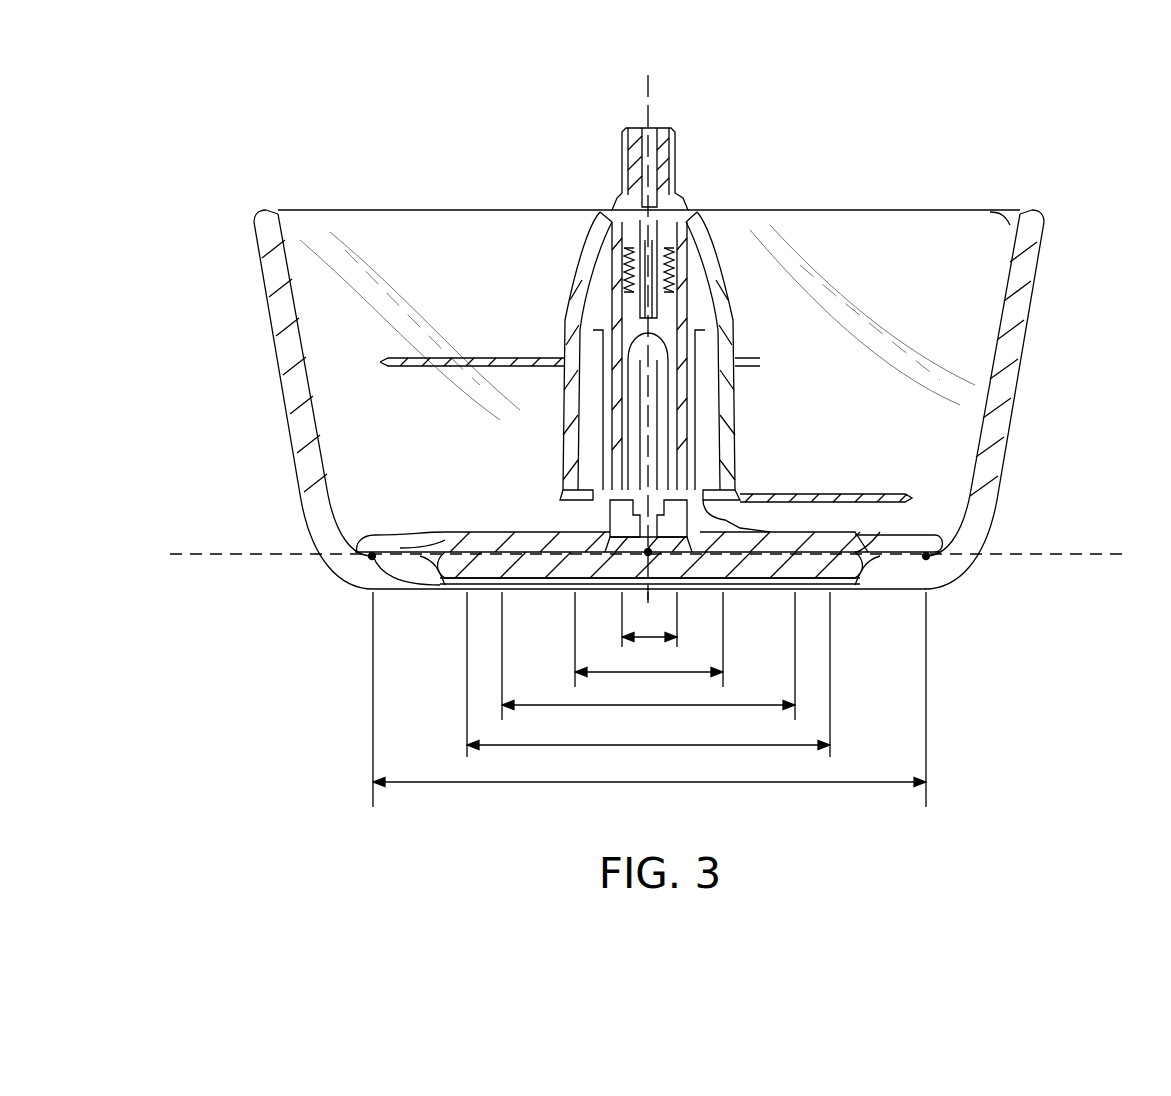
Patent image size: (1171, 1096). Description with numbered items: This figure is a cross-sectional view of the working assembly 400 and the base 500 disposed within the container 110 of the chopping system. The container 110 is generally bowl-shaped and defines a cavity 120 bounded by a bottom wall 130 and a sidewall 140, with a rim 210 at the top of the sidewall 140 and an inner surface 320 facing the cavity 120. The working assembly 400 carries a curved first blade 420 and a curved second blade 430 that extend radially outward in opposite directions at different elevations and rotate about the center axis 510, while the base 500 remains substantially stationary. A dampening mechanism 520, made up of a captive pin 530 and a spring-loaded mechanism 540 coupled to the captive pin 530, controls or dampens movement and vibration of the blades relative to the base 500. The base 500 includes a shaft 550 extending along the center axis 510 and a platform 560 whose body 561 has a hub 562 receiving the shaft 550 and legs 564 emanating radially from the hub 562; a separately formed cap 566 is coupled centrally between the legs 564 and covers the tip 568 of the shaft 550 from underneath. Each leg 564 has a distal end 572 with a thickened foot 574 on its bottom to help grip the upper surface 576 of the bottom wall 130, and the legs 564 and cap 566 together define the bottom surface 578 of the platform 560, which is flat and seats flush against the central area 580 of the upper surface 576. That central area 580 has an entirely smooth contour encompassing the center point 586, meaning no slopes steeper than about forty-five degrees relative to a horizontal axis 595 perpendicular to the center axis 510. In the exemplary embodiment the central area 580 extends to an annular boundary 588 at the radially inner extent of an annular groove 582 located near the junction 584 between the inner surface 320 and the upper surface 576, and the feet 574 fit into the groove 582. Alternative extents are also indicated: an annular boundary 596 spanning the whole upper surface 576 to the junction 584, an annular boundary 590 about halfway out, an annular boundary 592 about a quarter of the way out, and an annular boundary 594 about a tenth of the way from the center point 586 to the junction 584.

The container 110 is at (262, 272).
The cavity 120 is at (892, 286).
The bottom wall 130 is at (850, 567).
The sidewall 140 is at (1025, 342).
The rim 210 is at (1042, 214).
The inner surface 320 is at (1004, 212).
The working assembly 400 is at (683, 175).
The first blade 420 is at (475, 357).
The second blade 430 is at (835, 520).
The base 500 is at (440, 523).
The center axis 510 is at (652, 82).
The dampening mechanism 520 is at (603, 285).
The captive pin 530 is at (640, 403).
The spring-loaded mechanism 540 is at (620, 252).
The shaft 550 is at (640, 327).
The platform 560 is at (487, 525).
The body 561 is at (735, 497).
The hub 562 is at (708, 518).
The legs 564 is at (790, 548).
The cap 566 is at (600, 546).
The tip 568 is at (645, 535).
The distal end 572 is at (870, 548).
The foot 574 is at (390, 575).
The upper surface 576 is at (917, 570).
The bottom surface 578 is at (440, 578).
The central area 580 is at (770, 812).
The annular groove 582 is at (412, 548).
The junction 584 is at (372, 556).
The center point 586 is at (652, 553).
The annular boundary 588 is at (545, 745).
The annular boundary 590 is at (600, 705).
The annular boundary 592 is at (620, 672).
The annular boundary 594 is at (657, 637).
The horizontal axis 595 is at (1098, 556).
The annular boundary 596 is at (480, 782).